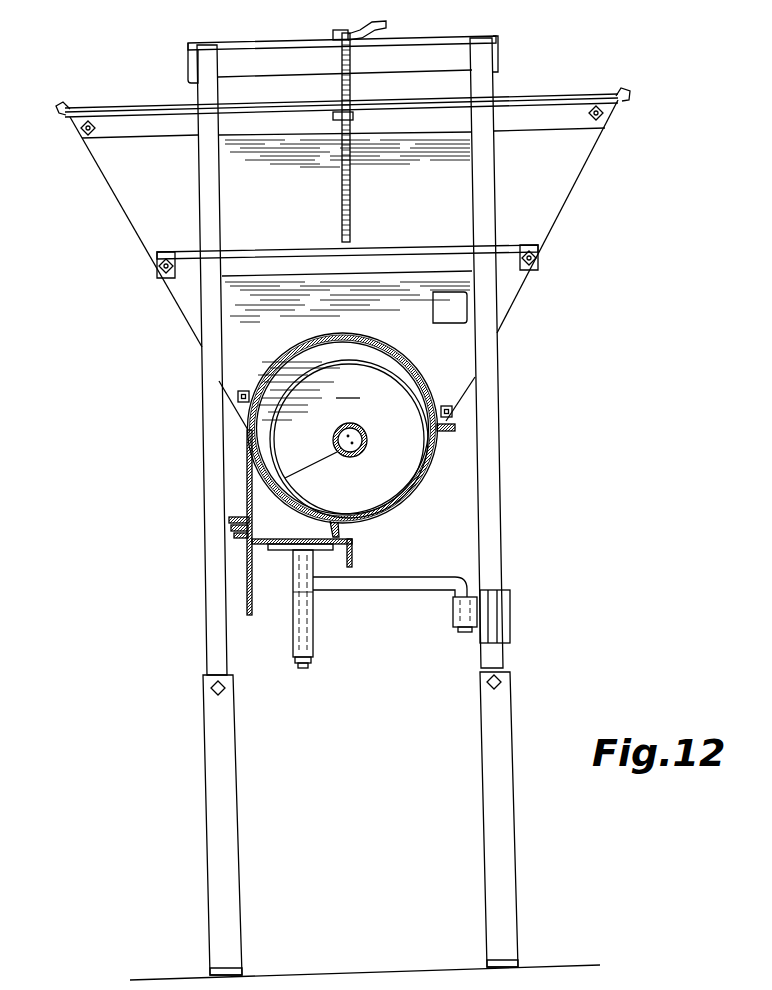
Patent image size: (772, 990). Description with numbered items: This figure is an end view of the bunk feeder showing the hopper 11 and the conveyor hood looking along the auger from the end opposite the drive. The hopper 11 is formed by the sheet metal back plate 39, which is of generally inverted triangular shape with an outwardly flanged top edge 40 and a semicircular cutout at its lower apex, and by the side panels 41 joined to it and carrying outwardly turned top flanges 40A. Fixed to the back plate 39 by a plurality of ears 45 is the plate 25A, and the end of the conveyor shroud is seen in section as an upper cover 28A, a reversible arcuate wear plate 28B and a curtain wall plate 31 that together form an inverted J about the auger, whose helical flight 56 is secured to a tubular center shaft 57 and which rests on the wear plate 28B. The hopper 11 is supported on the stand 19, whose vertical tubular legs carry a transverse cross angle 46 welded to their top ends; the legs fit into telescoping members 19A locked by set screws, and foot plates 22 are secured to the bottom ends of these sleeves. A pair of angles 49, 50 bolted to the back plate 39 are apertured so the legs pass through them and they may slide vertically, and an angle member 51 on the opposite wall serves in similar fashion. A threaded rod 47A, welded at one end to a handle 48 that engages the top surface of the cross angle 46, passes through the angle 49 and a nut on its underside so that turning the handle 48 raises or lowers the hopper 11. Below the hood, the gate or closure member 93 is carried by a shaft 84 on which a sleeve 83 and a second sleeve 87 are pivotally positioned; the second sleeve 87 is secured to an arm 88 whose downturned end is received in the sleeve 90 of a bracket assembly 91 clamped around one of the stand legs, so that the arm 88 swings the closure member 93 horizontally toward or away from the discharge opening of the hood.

The hopper 11 is at (560, 70).
The stand 19 is at (206, 492).
The telescoping member 19A is at (207, 807).
The foot plate 22 is at (505, 965).
The plate 25A is at (362, 336).
The upper cover 28A is at (247, 462).
The reversible bottom wall or wear plate 28B is at (408, 494).
The curtain wall plate 31 is at (247, 589).
The back plate 39 is at (436, 209).
The outwardly flanged top edge 40 is at (115, 106).
The outwardly turned top flange 40A is at (55, 106).
The side panel 41 is at (132, 230).
The ear 45 is at (242, 390).
The transverse cross angle 46 is at (454, 38).
The threaded rod 47A is at (351, 200).
The handle 48 is at (378, 21).
The angle 49 is at (534, 118).
The angle 50 is at (284, 228).
The angle member 51 is at (453, 308).
The helical flight 56 is at (392, 372).
The tubular center shaft 57 is at (365, 431).
The sleeve 83 is at (293, 640).
The shaft 84 is at (298, 667).
The second sleeve 87 is at (296, 575).
The arm 88 is at (385, 581).
The sleeve 90 is at (455, 618).
The bracket assembly 91 is at (512, 605).
The gate or closure member 93 is at (353, 552).